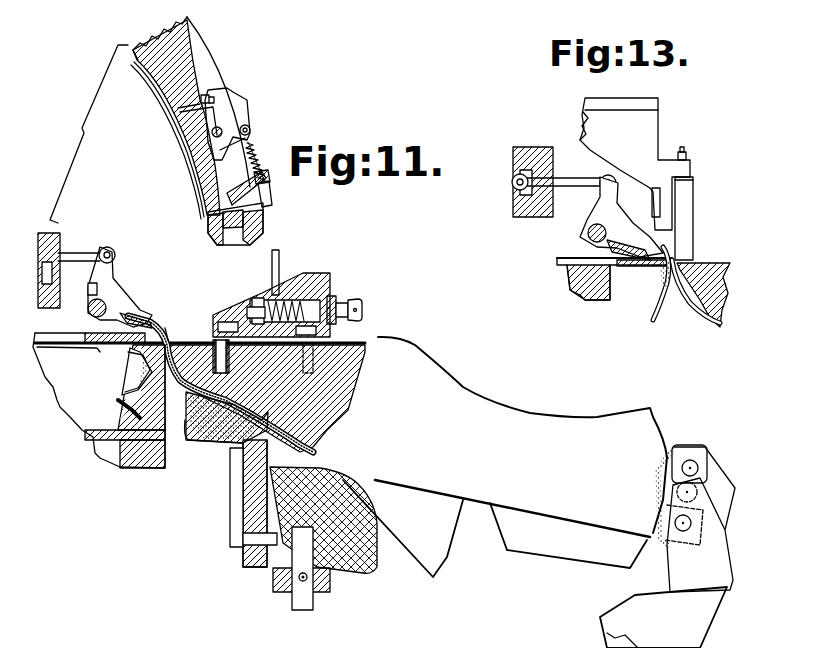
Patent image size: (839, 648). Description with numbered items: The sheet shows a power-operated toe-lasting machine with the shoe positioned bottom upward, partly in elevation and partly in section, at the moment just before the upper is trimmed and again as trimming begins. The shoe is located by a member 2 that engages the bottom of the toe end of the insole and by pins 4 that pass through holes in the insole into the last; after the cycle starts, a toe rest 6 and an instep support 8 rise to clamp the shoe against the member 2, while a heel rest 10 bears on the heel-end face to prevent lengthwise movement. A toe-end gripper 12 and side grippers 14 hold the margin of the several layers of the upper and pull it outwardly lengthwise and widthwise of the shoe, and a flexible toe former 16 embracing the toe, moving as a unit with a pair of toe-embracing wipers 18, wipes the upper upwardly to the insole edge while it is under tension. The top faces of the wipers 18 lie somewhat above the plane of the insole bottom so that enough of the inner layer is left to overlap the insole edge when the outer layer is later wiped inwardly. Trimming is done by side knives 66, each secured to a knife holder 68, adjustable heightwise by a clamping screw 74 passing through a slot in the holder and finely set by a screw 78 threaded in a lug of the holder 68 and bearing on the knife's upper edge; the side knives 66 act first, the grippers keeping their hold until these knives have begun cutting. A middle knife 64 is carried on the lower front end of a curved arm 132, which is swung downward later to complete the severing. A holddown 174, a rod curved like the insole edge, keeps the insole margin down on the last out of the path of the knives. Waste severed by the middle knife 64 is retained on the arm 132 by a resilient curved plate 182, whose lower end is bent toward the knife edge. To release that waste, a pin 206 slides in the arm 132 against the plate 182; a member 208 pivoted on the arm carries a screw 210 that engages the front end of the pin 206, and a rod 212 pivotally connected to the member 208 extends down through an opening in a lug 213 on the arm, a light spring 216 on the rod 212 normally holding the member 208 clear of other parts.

In FIG. 11, the member 2 is at (222, 330).
In FIG. 11, the pins 4 is at (207, 340).
In FIG. 11, the toe rest 6 is at (213, 430).
In FIG. 11, the instep support 8 is at (362, 563).
In FIG. 11, the heel rest 10 is at (718, 461).
In FIG. 11, the toe-end gripper 12 is at (127, 297).
In FIG. 13, the side grippers 14 is at (628, 216).
In FIG. 11, the flexible toe former 16 is at (137, 370).
In FIG. 13, the flexible toe former 16 is at (663, 300).
In FIG. 11, the toe-embracing wipers 18 is at (117, 343).
In FIG. 13, the toe-embracing wipers 18 is at (633, 262).
In FIG. 11, the middle knife 64 is at (236, 240).
In FIG. 13, the side knives 66 is at (693, 238).
In FIG. 13, the knife holder 68 is at (657, 125).
In FIG. 13, the clamping screw 74 is at (652, 190).
In FIG. 13, the screw 78 is at (685, 153).
In FIG. 11, the curved arm 132 is at (210, 42).
In FIG. 11, the holddown 174 is at (180, 337).
In FIG. 11, the resilient curved plate 182 is at (173, 100).
In FIG. 11, the pin 206 is at (180, 113).
In FIG. 11, the member 208 is at (233, 117).
In FIG. 11, the screw 210 is at (210, 100).
In FIG. 11, the rod 212 is at (268, 203).
In FIG. 11, the lug 213 is at (270, 180).
In FIG. 11, the spring 216 is at (257, 143).